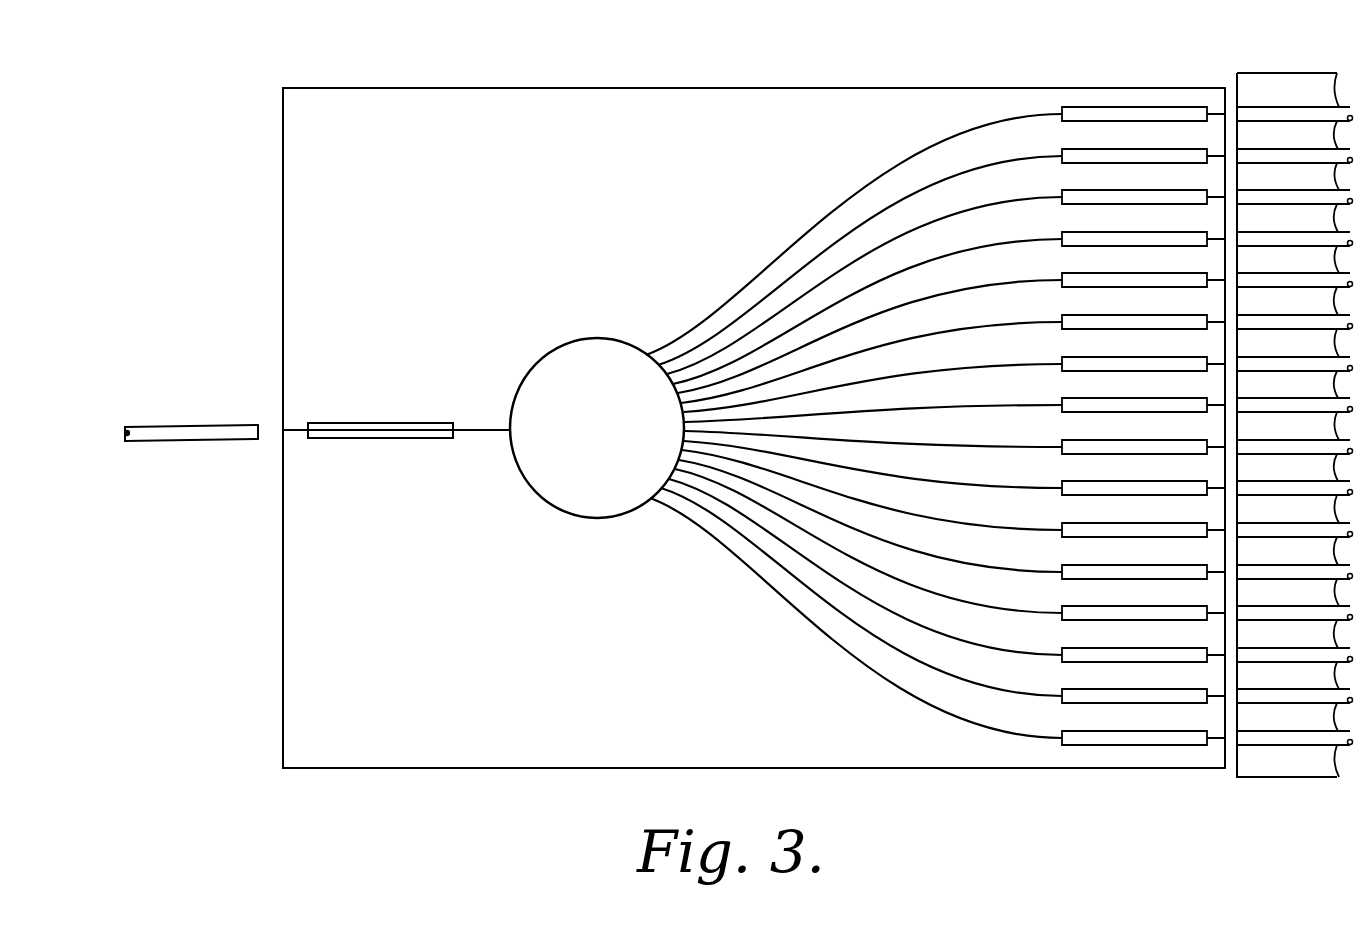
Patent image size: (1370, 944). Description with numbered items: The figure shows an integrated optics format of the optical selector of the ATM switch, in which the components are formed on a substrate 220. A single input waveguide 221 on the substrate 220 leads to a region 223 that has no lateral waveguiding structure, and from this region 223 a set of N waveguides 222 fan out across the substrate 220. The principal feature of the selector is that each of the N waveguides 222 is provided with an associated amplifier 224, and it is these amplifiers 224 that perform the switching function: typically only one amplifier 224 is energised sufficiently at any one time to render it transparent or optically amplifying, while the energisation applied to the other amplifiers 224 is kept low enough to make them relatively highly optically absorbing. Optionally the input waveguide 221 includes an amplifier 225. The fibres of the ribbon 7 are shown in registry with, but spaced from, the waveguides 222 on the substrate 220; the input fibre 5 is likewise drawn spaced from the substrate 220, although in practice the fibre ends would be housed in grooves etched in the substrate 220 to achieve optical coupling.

The input optical fiber 5 is at (183, 432).
The ribbon 7 is at (1275, 92).
The substrate 220 is at (660, 113).
The waveguide 221 is at (295, 433).
The waveguides 222 is at (892, 583).
The region without a lateral waveguiding structure 223 is at (590, 362).
The amplifier 224 is at (1083, 232).
The amplifier 225 is at (377, 422).